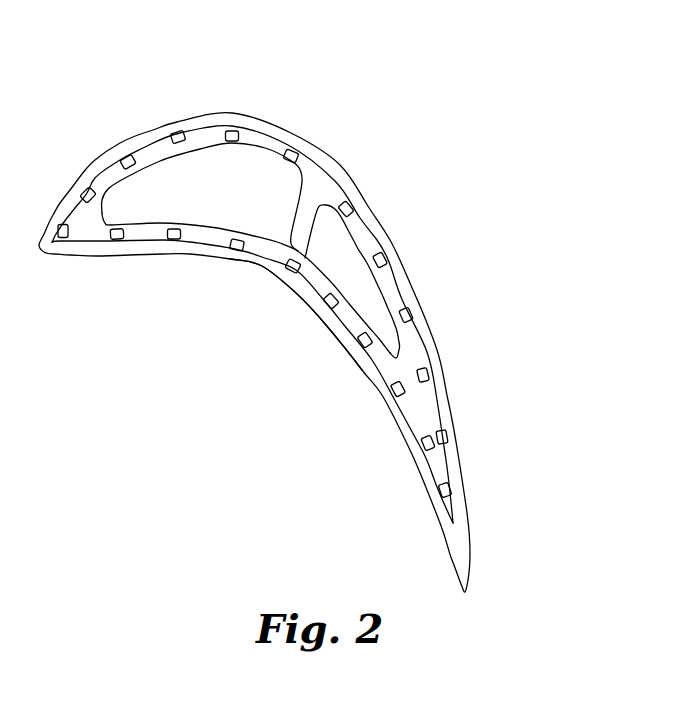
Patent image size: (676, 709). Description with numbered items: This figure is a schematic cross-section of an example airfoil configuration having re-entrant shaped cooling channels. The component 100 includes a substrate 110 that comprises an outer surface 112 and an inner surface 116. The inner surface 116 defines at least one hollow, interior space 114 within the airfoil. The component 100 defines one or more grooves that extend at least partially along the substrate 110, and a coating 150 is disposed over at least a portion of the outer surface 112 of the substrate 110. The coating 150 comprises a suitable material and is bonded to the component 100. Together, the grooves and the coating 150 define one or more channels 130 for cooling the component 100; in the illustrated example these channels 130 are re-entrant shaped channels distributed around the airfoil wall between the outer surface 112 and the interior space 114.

The component 100 is at (506, 84).
The substrate 110 is at (313, 178).
The outer surface 112 is at (365, 222).
The hollow, interior space 114 is at (240, 169).
The inner surface 116 is at (163, 222).
The channels 130 is at (410, 314).
The coating 150 is at (297, 291).